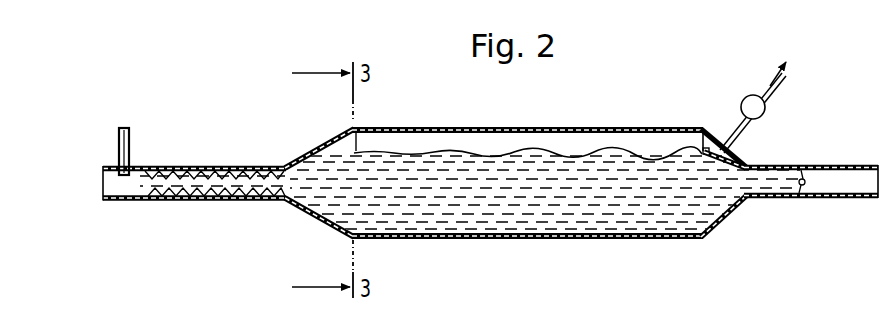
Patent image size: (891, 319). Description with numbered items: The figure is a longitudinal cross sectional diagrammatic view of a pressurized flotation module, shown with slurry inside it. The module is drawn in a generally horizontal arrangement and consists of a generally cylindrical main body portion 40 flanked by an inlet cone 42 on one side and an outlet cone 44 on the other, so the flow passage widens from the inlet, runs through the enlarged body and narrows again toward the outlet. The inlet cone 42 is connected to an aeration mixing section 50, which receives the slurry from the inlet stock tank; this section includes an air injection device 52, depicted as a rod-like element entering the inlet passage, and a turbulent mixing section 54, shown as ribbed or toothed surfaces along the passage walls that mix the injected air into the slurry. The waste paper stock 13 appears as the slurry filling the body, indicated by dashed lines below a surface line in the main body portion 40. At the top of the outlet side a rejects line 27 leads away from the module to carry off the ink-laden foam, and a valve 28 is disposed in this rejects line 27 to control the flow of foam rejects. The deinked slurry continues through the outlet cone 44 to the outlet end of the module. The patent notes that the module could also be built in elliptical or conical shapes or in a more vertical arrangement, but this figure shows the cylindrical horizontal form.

The waste paper stock 13 is at (633, 210).
The rejects line 27 is at (772, 92).
The valve 28 is at (741, 104).
The main body portion 40 is at (520, 240).
The inlet cone 42 is at (322, 219).
The outlet cone 44 is at (737, 207).
The aeration mixing section 50 is at (189, 154).
The air injection device 52 is at (120, 141).
The turbulent mixing section 54 is at (244, 170).